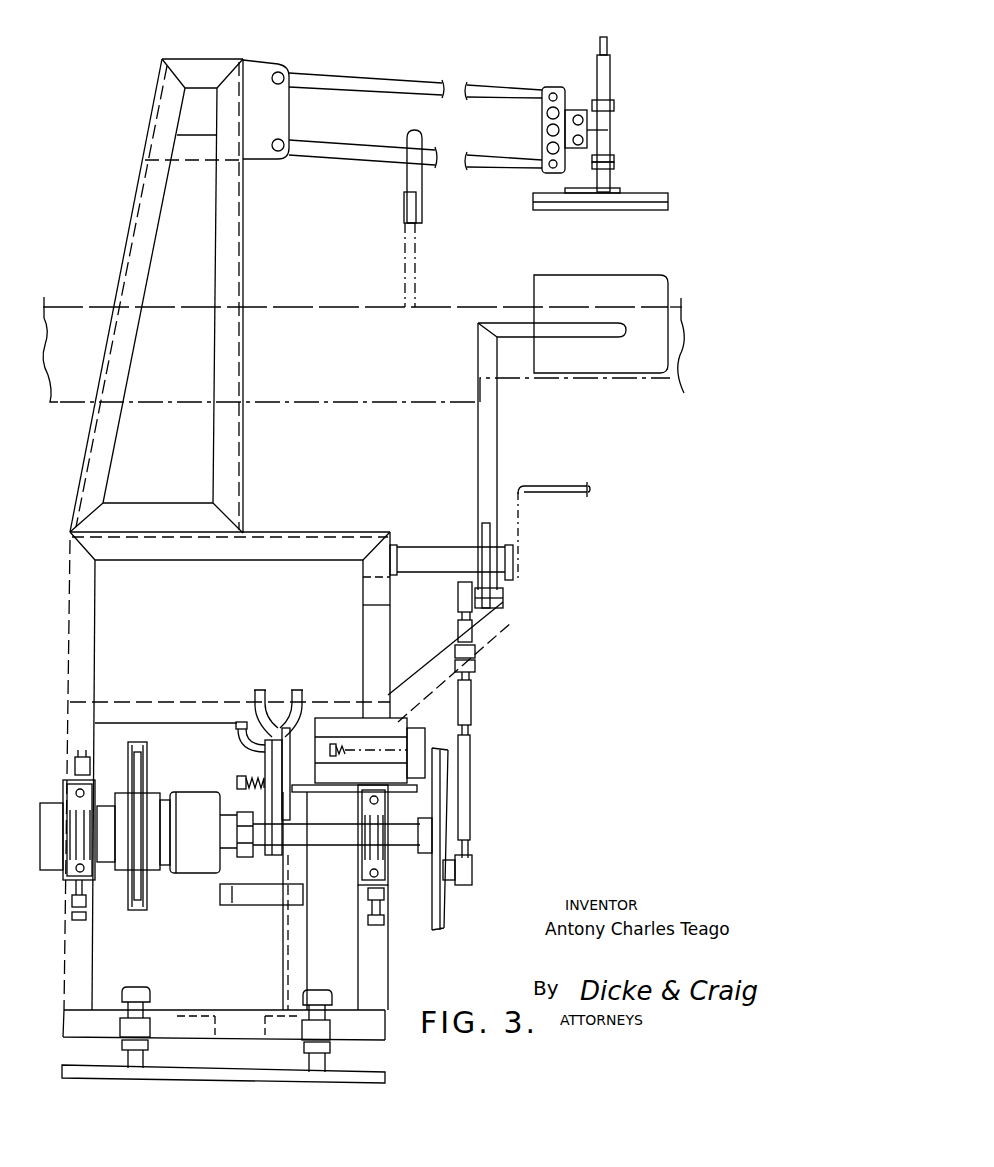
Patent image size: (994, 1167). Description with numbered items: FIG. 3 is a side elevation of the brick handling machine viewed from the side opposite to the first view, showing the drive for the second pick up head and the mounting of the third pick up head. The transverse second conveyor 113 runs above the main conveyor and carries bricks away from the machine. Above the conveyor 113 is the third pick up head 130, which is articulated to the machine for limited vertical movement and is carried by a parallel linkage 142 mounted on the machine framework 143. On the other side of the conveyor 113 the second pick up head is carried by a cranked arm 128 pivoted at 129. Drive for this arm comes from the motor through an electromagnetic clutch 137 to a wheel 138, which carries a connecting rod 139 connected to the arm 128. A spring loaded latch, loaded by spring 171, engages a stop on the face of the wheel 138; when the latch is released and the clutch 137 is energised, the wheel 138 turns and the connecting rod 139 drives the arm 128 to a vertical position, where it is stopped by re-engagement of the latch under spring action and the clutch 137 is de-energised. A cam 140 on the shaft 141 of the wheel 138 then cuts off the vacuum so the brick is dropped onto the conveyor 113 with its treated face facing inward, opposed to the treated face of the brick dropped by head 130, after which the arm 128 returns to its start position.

The second conveyor 113 is at (75, 306).
The machine framework 143 is at (130, 246).
The parallel linkage 142 is at (305, 80).
The third pick up head 130 is at (556, 207).
The cranked arm 128 is at (485, 366).
The pivot 129 is at (500, 602).
The connecting rod 139 is at (471, 700).
The spring 171 is at (358, 748).
The shaft 141 is at (318, 843).
The electromagnetic clutch 137 is at (178, 876).
The cam 140 is at (264, 857).
The wheel 138 is at (436, 925).